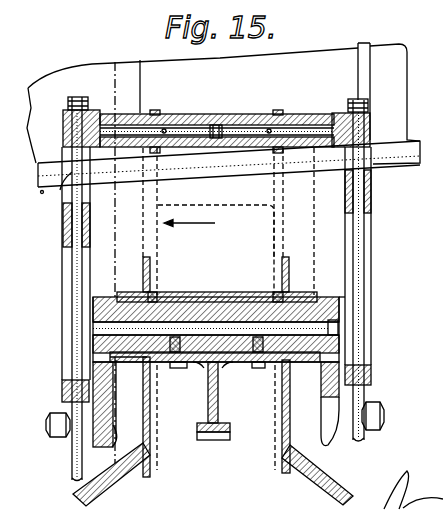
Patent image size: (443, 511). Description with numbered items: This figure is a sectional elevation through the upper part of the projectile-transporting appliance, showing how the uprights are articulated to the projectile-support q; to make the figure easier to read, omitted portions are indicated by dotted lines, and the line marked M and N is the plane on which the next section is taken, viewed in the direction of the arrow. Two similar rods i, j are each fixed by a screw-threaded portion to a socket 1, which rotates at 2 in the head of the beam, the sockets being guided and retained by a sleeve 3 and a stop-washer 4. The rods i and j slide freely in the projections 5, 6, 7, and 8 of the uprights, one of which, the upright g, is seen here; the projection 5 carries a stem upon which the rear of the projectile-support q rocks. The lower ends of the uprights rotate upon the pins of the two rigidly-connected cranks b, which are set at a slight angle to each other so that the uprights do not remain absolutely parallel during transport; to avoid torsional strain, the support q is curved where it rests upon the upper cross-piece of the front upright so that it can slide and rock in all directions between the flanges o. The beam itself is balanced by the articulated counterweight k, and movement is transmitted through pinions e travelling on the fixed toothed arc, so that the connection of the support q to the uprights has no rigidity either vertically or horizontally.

The section line M N M is at (223, 251).
The socket 1 is at (373, 127).
The rotation point in head of beam 2 is at (304, 131).
The sleeve 3 is at (238, 116).
The stop-washer 4 is at (277, 114).
The projection 5 is at (366, 192).
The projection 6 is at (67, 236).
The projection 7 is at (368, 379).
The projection 8 is at (64, 388).
The crank b is at (101, 432).
The pinion e is at (64, 190).
The upright g is at (373, 263).
The rod i is at (364, 297).
The rod j is at (72, 295).
The articulated counterweight k is at (69, 263).
The section line M N is at (108, 437).
The flanges o is at (38, 200).
The projectile-support q is at (231, 165).